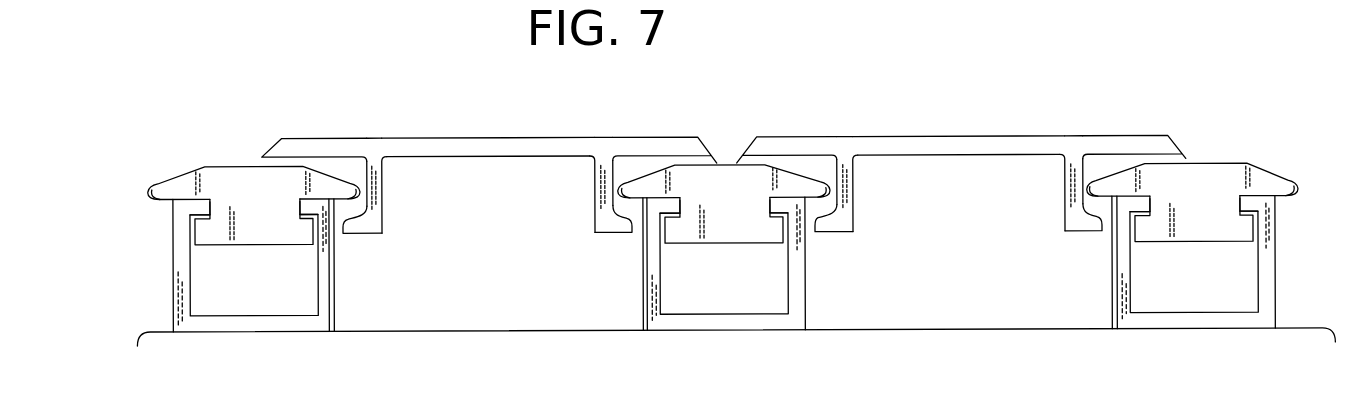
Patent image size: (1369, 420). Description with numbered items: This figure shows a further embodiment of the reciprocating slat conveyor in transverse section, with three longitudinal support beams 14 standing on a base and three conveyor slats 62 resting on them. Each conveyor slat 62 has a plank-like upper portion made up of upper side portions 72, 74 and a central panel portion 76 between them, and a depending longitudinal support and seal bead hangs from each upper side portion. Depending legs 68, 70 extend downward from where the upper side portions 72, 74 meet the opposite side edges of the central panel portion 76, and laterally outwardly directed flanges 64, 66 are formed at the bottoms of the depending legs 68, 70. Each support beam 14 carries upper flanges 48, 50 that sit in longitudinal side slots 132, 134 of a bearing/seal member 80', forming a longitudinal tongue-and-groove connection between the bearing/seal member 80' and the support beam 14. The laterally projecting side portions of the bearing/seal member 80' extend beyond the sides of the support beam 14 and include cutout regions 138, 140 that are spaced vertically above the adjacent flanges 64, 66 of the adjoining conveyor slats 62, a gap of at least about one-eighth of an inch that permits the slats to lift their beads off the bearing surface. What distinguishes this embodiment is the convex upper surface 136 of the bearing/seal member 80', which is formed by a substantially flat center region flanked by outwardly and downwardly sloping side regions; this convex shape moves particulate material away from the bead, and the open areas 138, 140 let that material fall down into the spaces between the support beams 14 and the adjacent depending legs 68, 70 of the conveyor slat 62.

The longitudinal support beam 14 is at (255, 343).
The upper flange 48 is at (740, 164).
The upper flange 50 is at (320, 203).
The conveyor slat 62 is at (723, 181).
The flange 64 is at (363, 225).
The flange 66 is at (622, 227).
The depending leg 68 is at (379, 204).
The depending leg 70 is at (603, 193).
The upper side portion 72 is at (312, 150).
The upper side portion 74 is at (643, 147).
The central panel portion 76 is at (447, 143).
The bearing/seal member 80' is at (724, 263).
The longitudinal side slot 132 is at (198, 208).
The longitudinal side slot 134 is at (307, 207).
The convex upper surface 136 is at (242, 166).
The cutout region 138 is at (162, 188).
The cutout region 140 is at (358, 190).